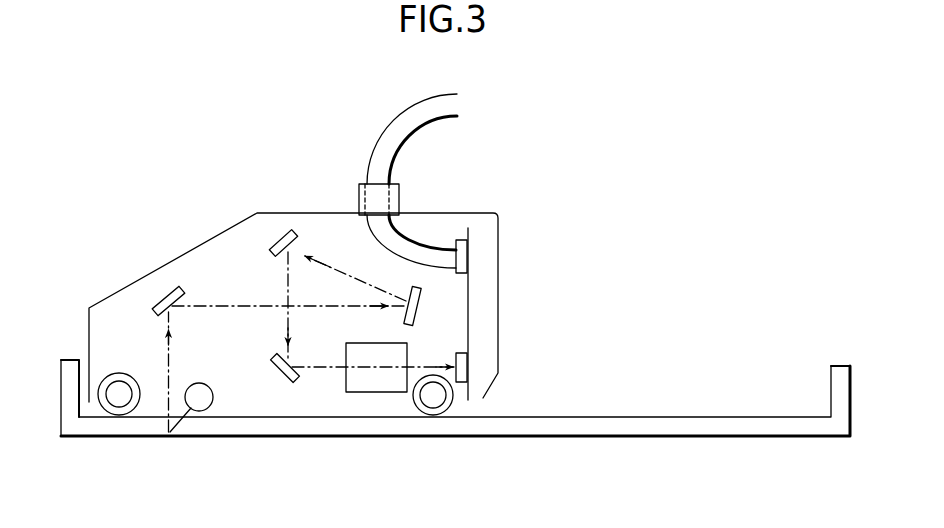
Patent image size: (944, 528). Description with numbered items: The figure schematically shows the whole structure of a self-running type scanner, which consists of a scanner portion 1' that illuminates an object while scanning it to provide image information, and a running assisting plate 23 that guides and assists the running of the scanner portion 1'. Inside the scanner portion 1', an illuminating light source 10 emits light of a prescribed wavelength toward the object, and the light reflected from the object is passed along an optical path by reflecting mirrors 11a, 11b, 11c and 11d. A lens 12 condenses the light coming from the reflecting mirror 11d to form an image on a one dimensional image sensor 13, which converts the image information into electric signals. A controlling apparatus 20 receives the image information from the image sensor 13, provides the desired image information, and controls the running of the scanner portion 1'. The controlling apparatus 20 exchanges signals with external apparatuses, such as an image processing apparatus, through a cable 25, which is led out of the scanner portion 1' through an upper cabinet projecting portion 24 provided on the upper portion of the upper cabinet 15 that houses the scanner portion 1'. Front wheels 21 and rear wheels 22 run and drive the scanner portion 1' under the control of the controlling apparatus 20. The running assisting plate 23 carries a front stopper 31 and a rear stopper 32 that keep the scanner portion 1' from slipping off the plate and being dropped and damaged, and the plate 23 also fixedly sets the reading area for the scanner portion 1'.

The scanner portion 1' is at (327, 297).
The illuminating light source 10 is at (205, 385).
The reflecting mirror 11a is at (179, 291).
The reflecting mirror 11b is at (418, 308).
The reflecting mirror 11c is at (296, 237).
The reflecting mirror 11d is at (280, 371).
The lens 12 is at (346, 389).
The one dimensional image sensor 13 is at (468, 365).
The upper cabinet 15 is at (499, 238).
The controlling apparatus 20 is at (473, 310).
The front wheels 21 is at (115, 400).
The rear wheels 22 is at (432, 402).
The running assisting plate 23 is at (665, 432).
The upper cabinet projecting portion 24 is at (399, 190).
The cable 25 is at (440, 122).
The front stopper 31 is at (57, 380).
The rear stopper 32 is at (841, 395).